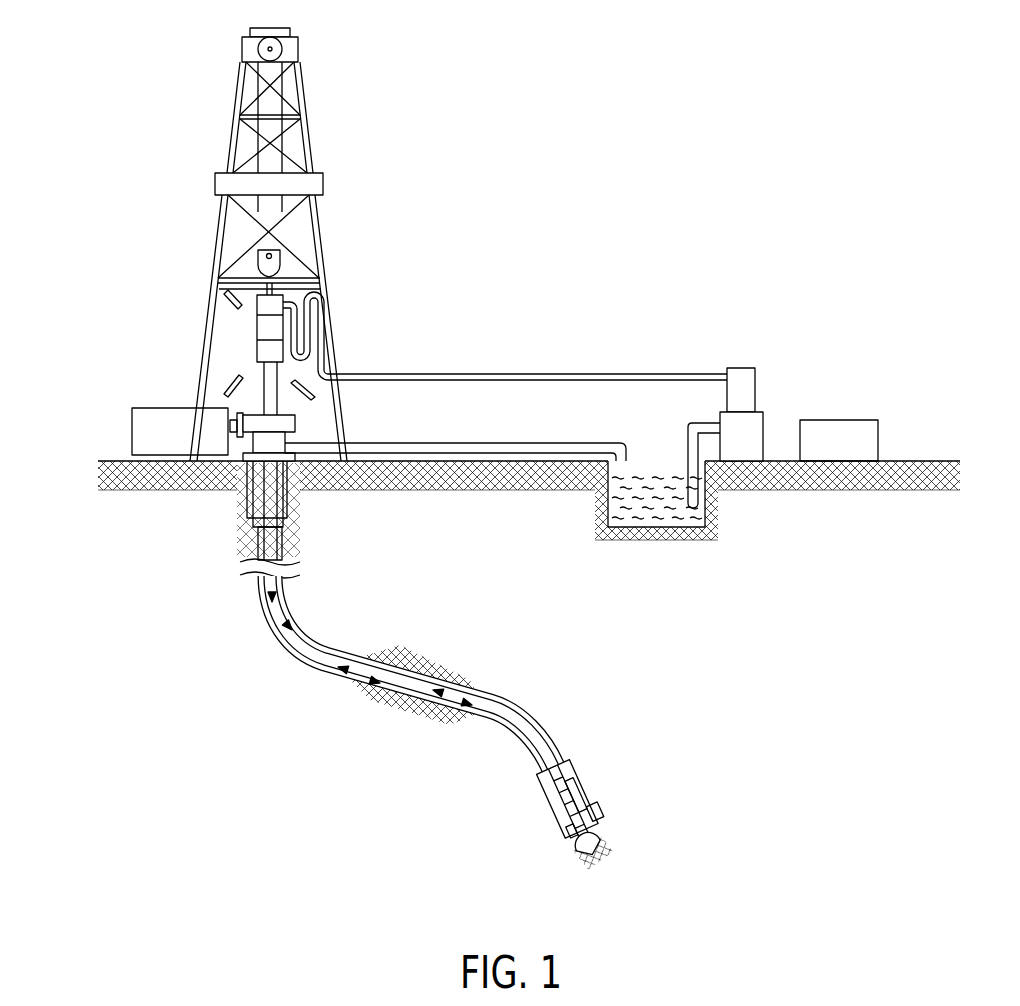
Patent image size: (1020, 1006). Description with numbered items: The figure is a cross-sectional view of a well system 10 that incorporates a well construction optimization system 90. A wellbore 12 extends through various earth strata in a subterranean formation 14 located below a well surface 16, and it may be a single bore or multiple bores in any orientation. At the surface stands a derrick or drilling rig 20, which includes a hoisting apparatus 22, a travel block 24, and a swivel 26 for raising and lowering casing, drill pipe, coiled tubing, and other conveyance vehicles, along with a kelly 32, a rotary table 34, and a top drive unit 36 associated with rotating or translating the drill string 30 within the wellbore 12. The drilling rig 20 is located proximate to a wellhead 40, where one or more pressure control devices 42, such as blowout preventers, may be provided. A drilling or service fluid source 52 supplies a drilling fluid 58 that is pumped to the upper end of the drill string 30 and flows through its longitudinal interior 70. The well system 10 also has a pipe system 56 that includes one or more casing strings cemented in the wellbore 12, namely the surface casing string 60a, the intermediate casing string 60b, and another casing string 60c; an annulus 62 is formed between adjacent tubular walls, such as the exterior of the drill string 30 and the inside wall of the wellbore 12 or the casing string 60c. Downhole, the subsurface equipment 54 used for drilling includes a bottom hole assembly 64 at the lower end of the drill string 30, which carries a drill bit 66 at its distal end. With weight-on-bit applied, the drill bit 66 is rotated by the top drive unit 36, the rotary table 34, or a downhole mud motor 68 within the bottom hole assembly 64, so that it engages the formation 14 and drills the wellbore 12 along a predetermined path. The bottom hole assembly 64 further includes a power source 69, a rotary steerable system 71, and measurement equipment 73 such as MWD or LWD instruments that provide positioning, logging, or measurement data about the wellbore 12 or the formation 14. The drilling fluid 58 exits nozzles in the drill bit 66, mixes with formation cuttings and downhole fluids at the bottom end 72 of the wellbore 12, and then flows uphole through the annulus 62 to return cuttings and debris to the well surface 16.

The well system 10 is at (364, 127).
The wellbore 12 is at (320, 676).
The formation 14 is at (797, 633).
The well surface 16 is at (100, 470).
The drilling rig 20 is at (244, 46).
The hoisting apparatus 22 is at (288, 53).
The travel block 24 is at (282, 264).
The swivel 26 is at (270, 310).
The drill string 30 is at (384, 661).
The kelly 32 is at (262, 398).
The rotary table 34 is at (301, 389).
The top drive unit 36 is at (265, 347).
The wellhead 40 is at (310, 429).
The pressure control device 42 is at (250, 448).
The fluid source 52 is at (688, 532).
The subsurface equipment 54 is at (555, 774).
The pipe system 56 is at (272, 657).
The drilling fluid 58 is at (636, 530).
The surface casing string 60a is at (247, 478).
The intermediate casing string 60b is at (252, 512).
The casing string 60c is at (285, 552).
The annulus 62 is at (316, 644).
The bottom hole assembly 64 is at (538, 787).
The drill bit 66 is at (568, 853).
The mud motor 68 is at (572, 770).
The power source 69 is at (583, 797).
The longitudinal interior 70 is at (530, 730).
The rotary steerable system 71 is at (597, 825).
The bottom end 72 is at (592, 857).
The measurement equipment 73 is at (553, 832).
The well construction optimization system 90 is at (841, 420).